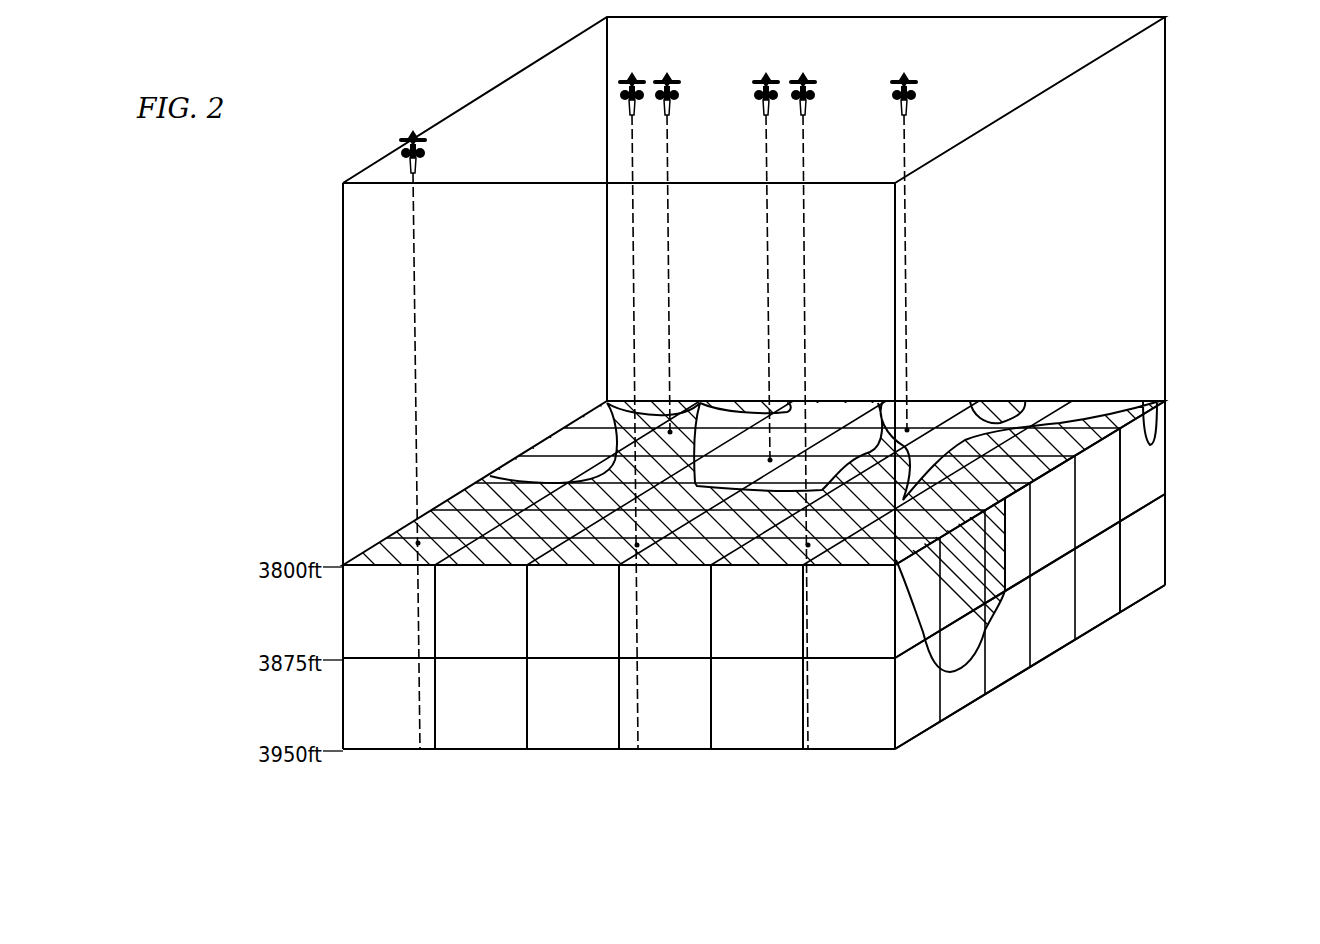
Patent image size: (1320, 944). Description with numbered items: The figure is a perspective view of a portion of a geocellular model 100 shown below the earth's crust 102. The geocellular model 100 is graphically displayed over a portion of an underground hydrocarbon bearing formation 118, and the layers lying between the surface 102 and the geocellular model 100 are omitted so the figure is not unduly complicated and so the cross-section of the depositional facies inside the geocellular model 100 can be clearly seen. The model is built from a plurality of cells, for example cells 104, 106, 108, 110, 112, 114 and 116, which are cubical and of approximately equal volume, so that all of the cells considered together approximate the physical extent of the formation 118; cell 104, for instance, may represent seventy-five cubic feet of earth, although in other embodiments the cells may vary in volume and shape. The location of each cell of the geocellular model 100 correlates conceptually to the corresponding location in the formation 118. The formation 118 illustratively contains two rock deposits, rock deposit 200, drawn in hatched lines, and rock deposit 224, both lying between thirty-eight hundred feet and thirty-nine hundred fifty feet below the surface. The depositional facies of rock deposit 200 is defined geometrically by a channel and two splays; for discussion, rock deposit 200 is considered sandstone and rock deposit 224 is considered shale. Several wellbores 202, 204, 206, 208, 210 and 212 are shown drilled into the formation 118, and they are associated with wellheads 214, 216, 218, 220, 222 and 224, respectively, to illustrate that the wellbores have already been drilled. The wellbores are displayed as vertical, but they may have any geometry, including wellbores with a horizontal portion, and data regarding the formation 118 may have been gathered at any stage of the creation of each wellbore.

The geocellular model 100 is at (346, 762).
The earth's crust 102 is at (871, 56).
The cell 104 is at (406, 628).
The cell 106 is at (498, 628).
The cell 108 is at (590, 628).
The cell 110 is at (683, 628).
The cell 112 is at (775, 628).
The cell 114 is at (866, 628).
The cell 116 is at (1164, 481).
The formation 118 is at (1183, 395).
The rock deposit 200 is at (750, 535).
The wellbore 202 is at (415, 333).
The wellbore 204 is at (633, 245).
The wellbore 206 is at (668, 226).
The wellbore 208 is at (805, 218).
The wellbore 210 is at (907, 228).
The wellbore 212 is at (768, 298).
The wellhead 214 is at (413, 170).
The wellhead 216 is at (630, 112).
The wellhead 218 is at (667, 107).
The wellhead 220 is at (803, 118).
The wellhead 222 is at (905, 115).
The rock deposit 224 is at (853, 435).